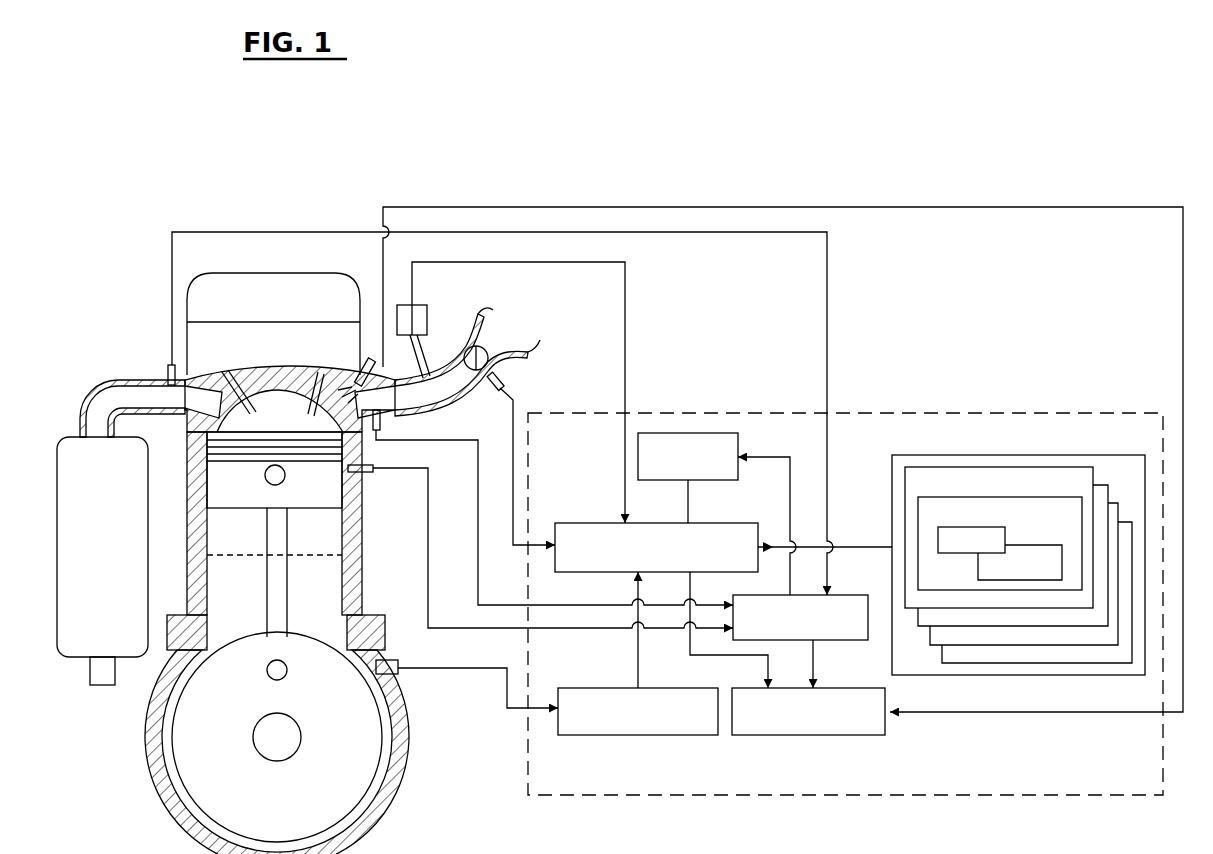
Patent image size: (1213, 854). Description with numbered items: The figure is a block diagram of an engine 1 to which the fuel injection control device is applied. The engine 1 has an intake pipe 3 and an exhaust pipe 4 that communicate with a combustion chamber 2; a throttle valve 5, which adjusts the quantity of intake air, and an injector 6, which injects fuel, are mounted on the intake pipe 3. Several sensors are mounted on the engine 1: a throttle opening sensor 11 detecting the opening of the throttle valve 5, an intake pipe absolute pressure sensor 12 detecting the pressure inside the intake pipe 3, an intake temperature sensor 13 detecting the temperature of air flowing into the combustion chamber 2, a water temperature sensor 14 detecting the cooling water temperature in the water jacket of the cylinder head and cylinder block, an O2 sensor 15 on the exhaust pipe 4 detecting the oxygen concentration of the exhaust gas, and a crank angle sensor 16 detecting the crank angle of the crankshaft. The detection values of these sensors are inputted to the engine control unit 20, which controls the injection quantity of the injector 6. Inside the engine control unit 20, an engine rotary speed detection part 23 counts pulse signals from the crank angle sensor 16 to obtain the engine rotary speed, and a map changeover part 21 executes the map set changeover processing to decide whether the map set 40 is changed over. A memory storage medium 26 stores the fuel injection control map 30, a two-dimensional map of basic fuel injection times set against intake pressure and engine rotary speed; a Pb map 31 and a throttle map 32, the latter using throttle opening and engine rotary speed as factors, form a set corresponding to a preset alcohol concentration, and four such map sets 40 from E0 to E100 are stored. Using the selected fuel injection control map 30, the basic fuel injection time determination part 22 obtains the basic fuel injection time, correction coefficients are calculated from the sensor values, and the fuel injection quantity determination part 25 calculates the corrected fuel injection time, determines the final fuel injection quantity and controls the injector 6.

The engine 1 is at (105, 258).
The combustion chamber 2 is at (280, 430).
The intake pipe 3 is at (410, 401).
The exhaust pipe 4 is at (150, 401).
The throttle valve 5 is at (505, 335).
The injector 6 is at (369, 353).
The throttle opening sensor 11 is at (506, 375).
The intake pipe absolute pressure sensor 12 is at (426, 318).
The intake temperature sensor 13 is at (420, 420).
The water temperature sensor 14 is at (376, 466).
The O2 sensor 15 is at (168, 370).
The crank angle sensor 16 is at (402, 676).
The engine control unit 20 is at (1088, 413).
The map changeover part 21 is at (718, 433).
The basic fuel injection time determination part 22 is at (716, 523).
The engine rotary speed detection part 23 is at (680, 735).
The fuel injection quantity determination part 25 is at (868, 735).
The memory storage medium 26 is at (990, 455).
The fuel injection control map 30 is at (1078, 497).
The Pb map 31 is at (1005, 535).
The throttle map 32 is at (978, 574).
The map set 40 is at (1044, 467).